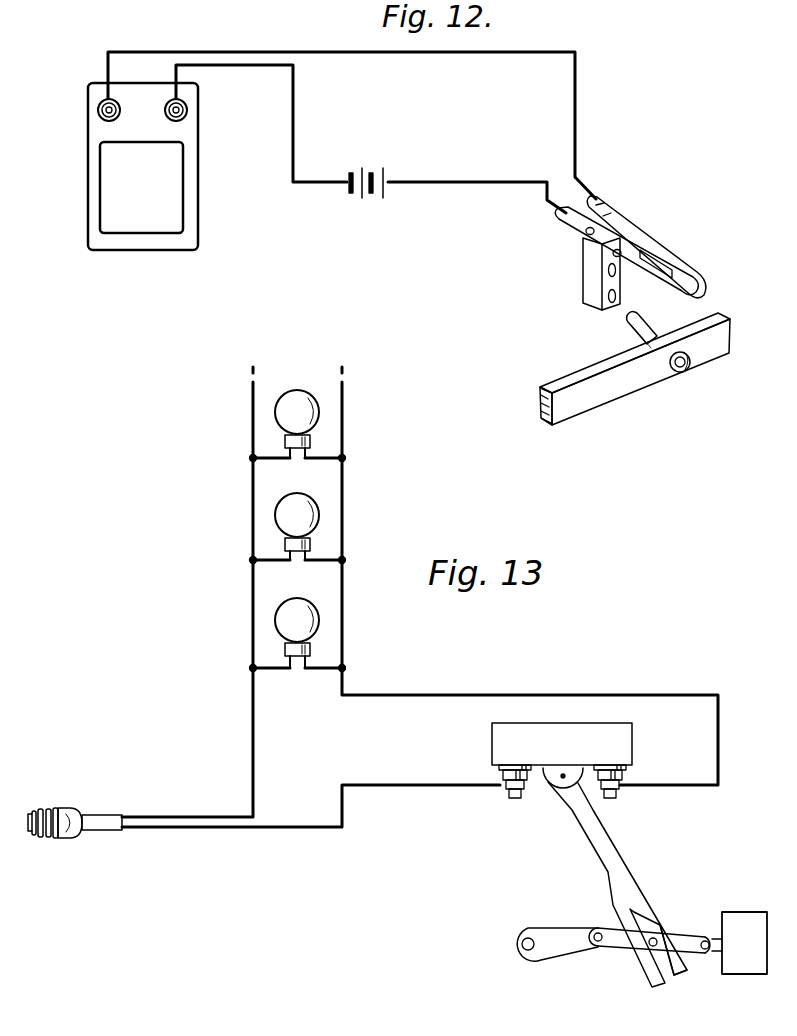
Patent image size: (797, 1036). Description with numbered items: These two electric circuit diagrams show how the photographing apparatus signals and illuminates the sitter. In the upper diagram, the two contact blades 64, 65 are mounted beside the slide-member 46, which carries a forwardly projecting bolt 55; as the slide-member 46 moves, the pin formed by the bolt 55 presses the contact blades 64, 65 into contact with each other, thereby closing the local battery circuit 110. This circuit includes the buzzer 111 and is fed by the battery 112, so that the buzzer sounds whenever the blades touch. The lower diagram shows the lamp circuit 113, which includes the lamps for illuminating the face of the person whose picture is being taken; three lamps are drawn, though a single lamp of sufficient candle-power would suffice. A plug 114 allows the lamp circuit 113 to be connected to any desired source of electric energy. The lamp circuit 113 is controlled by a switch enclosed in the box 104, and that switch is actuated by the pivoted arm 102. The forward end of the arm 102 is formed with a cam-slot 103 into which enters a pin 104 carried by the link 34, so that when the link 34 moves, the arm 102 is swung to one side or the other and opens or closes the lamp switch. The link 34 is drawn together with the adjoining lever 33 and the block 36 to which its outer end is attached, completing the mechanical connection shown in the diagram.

In FIG. 12, the local battery circuit 110 is at (477, 57).
In FIG. 12, the buzzer 111 is at (122, 193).
In FIG. 12, the battery 112 is at (366, 168).
In FIG. 12, the contact blade 65 is at (687, 267).
In FIG. 12, the contact blade 64 is at (626, 258).
In FIG. 12, the bolt 55 is at (625, 331).
In FIG. 12, the slide-member 46 is at (635, 387).
In FIG. 13, the lamp circuit 113 is at (402, 697).
In FIG. 13, the plug 114 is at (48, 807).
In FIG. 13, the pin / switch box 104 is at (620, 745).
In FIG. 13, the pivoted arm 102 is at (625, 868).
In FIG. 13, the cam-slot 103 is at (670, 980).
In FIG. 13, the link 34 is at (677, 933).
In FIG. 13, the lever 33 is at (553, 955).
In FIG. 13, the block 36 is at (740, 918).